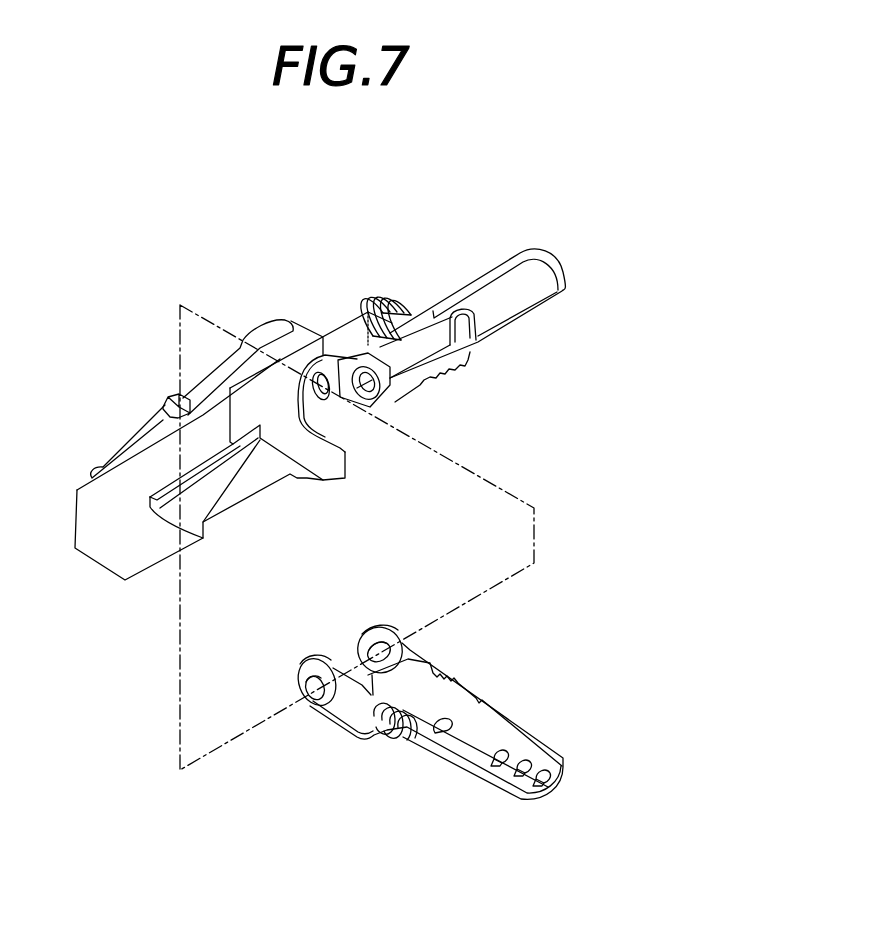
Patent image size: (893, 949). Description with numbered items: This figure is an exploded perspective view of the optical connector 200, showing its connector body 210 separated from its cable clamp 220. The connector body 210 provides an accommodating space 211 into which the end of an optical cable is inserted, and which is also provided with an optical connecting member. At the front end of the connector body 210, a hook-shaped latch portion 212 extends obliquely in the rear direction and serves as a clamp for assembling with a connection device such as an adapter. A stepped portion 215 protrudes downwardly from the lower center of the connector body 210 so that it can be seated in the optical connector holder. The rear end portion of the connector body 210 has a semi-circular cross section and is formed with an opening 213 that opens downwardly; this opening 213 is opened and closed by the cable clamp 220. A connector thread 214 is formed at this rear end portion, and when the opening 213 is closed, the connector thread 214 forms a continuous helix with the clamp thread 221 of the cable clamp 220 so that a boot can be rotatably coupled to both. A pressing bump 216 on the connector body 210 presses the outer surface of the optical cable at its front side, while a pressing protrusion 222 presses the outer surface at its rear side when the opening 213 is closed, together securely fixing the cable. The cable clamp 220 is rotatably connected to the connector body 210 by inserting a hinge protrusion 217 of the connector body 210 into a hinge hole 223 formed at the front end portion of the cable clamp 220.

The optical connector 200 is at (168, 280).
The connector body 210 is at (88, 487).
The accommodating space 211 is at (345, 412).
The latch portion 212 is at (265, 330).
The opening 213 is at (505, 305).
The connector thread 214 is at (400, 311).
The stepped portion 215 is at (352, 420).
The pressing bump 216 is at (447, 345).
The hinge protrusion 217 is at (322, 372).
The cable clamp 220 is at (347, 723).
The clamp thread 221 is at (397, 738).
The pressing protrusion 222 is at (517, 779).
The hinge hole 223 is at (312, 707).